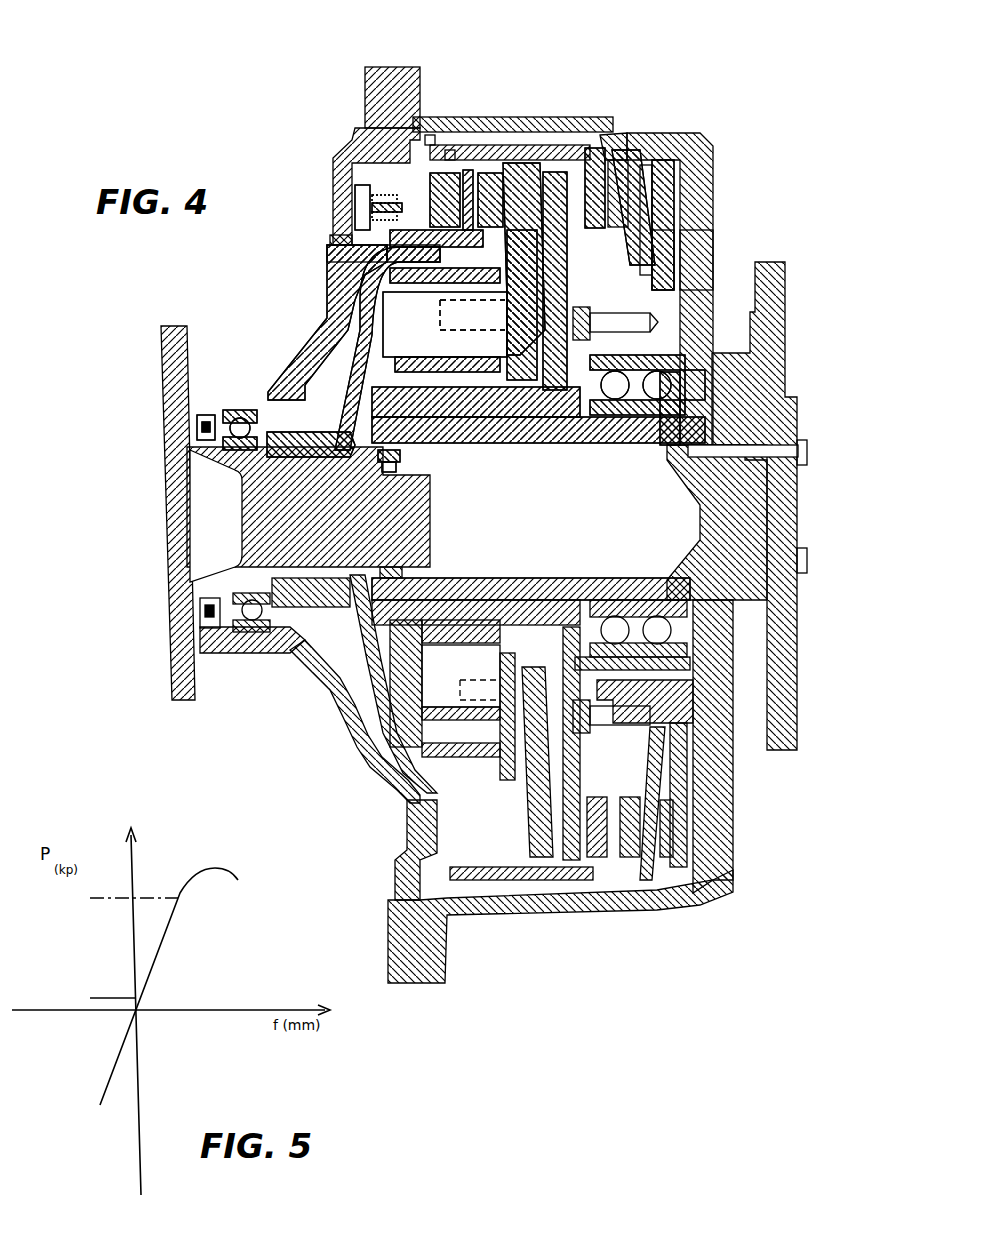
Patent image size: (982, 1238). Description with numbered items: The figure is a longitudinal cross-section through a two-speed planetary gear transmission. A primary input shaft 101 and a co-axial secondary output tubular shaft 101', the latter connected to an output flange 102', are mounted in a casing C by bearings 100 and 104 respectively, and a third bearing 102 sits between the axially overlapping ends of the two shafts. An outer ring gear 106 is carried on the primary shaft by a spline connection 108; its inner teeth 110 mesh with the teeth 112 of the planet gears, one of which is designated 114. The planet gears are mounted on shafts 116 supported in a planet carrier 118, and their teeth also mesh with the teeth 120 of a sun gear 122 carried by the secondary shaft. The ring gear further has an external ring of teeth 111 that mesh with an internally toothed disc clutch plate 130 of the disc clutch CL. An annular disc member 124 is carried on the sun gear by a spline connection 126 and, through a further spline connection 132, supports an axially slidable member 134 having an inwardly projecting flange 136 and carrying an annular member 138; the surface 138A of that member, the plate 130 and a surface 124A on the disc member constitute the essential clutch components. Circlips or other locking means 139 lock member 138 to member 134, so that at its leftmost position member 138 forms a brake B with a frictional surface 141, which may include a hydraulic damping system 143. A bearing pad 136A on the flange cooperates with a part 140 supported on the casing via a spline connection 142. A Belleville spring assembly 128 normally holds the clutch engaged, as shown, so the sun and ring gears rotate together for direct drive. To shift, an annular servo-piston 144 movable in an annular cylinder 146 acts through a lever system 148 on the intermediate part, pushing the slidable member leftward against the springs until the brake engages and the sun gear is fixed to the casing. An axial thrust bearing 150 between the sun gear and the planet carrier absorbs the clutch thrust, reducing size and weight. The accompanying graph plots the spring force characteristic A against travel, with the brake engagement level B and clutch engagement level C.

In FIG. 4, the bearing 100 is at (240, 410).
In FIG. 4, the primary input shaft 101 is at (156, 513).
In FIG. 4, the secondary output tubular shaft 101' is at (531, 569).
In FIG. 4, the third bearing 102 is at (550, 555).
In FIG. 4, the output flange 102' is at (765, 506).
In FIG. 4, the bearing 104 is at (705, 350).
In FIG. 4, the outer ring gear 106 is at (327, 296).
In FIG. 4, the spline connection 108 is at (192, 498).
In FIG. 4, the inner teeth 110 is at (360, 300).
In FIG. 4, the external ring of teeth 111 is at (327, 262).
In FIG. 4, the teeth 112 is at (380, 300).
In FIG. 4, the planet gear 114 is at (345, 393).
In FIG. 4, the shaft 116 is at (435, 346).
In FIG. 4, the planet carrier 118 is at (400, 454).
In FIG. 4, the teeth 120 is at (510, 443).
In FIG. 4, the sun gear 122 is at (460, 420).
In FIG. 4, the annular disc member 124 is at (600, 146).
In FIG. 4, the surface 124A is at (548, 146).
In FIG. 4, the spline connection 126 is at (590, 445).
In FIG. 4, the Belleville spring assembly 128 is at (568, 290).
In FIG. 4, the disc clutch plate 130 is at (455, 150).
In FIG. 4, the spline connection 132 is at (545, 150).
In FIG. 4, the axially slidable member 134 is at (590, 160).
In FIG. 4, the inwardly projecting flange 136 is at (630, 150).
In FIG. 4, the bearing pad 136A is at (660, 138).
In FIG. 4, the annular member 138 is at (378, 67).
In FIG. 4, the surface 138A is at (470, 125).
In FIG. 4, the circlips or other locking means 139 is at (430, 135).
In FIG. 4, the part 140 is at (660, 203).
In FIG. 4, the frictional surface 141 is at (340, 198).
In FIG. 4, the spline connection 142 is at (648, 135).
In FIG. 4, the hydraulic damping system 143 is at (325, 230).
In FIG. 4, the annular servo-piston 144 is at (675, 203).
In FIG. 4, the annular cylinder 146 is at (688, 240).
In FIG. 4, the lever system 148 is at (700, 260).
In FIG. 4, the axial thrust bearing 150 is at (348, 500).
In FIG. 5, the spring characteristic A is at (165, 938).
In FIG. 4, the brake B is at (398, 148).
In FIG. 5, the brake B is at (90, 996).
In FIG. 4, the casing C is at (713, 163).
In FIG. 5, the casing C is at (90, 896).
In FIG. 4, the disc clutch CL is at (492, 211).